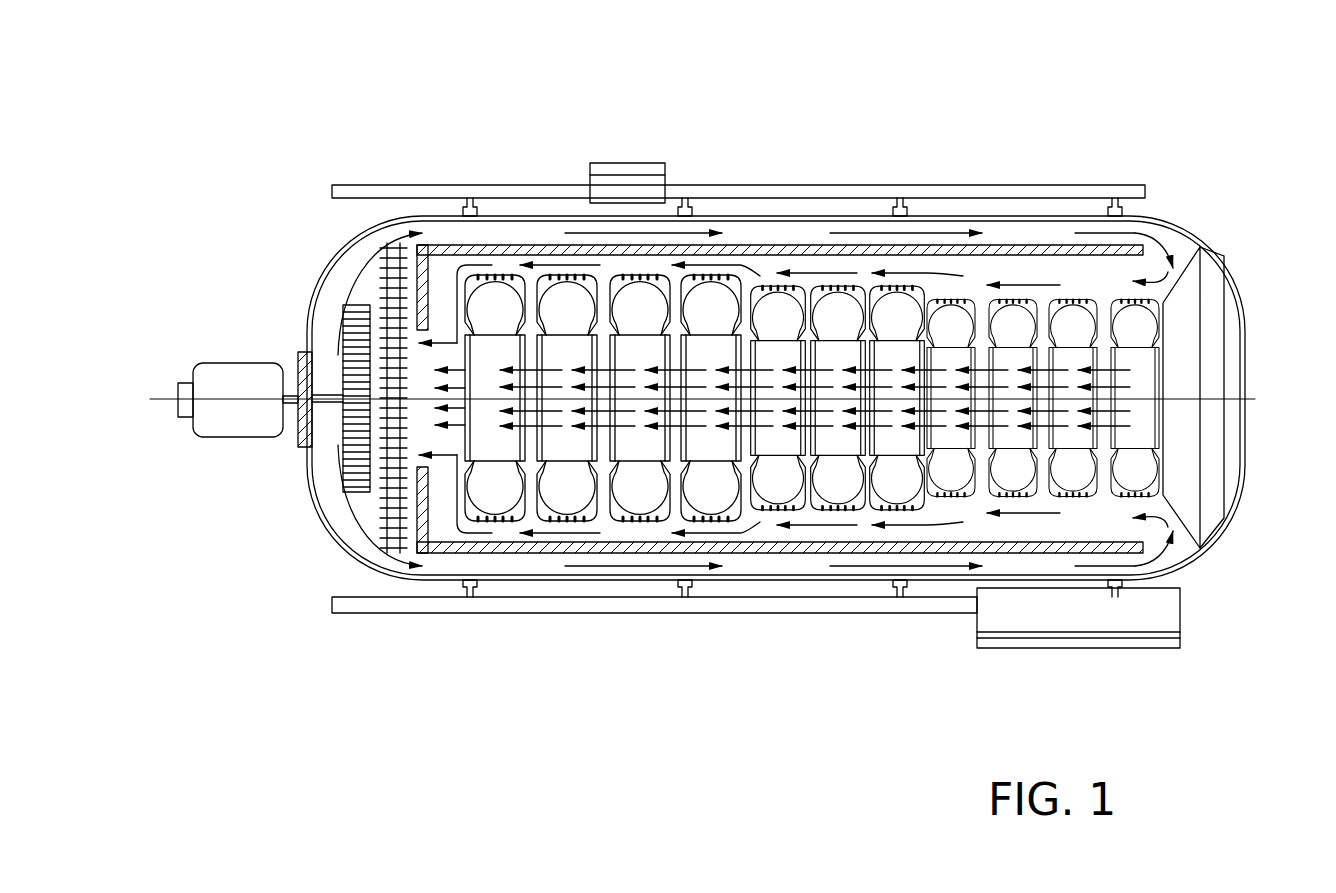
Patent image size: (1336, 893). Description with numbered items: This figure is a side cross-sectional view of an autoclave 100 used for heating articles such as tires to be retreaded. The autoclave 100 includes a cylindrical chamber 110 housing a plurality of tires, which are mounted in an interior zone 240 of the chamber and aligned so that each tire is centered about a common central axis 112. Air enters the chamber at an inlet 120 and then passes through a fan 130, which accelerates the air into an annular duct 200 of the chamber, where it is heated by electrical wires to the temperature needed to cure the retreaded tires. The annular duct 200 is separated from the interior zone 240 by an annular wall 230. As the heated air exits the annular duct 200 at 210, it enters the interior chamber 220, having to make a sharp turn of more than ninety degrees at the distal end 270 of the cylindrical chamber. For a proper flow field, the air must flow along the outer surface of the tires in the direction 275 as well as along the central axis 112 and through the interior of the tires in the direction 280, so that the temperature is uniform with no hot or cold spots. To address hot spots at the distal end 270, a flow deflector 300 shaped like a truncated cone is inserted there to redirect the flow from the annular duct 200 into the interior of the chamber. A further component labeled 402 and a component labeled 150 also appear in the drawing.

The autoclave 100 is at (290, 103).
The cylindrical chamber 110 is at (408, 210).
The central axis 112 is at (1258, 392).
The inlet 120 is at (298, 355).
The fan 130 is at (386, 538).
The fan 150 is at (357, 494).
The flat outer wall 402 is at (407, 258).
The annular duct 200 is at (787, 228).
The exit of annular duct 210 is at (1133, 232).
The interior chamber 220 is at (1075, 520).
The annular wall 230 is at (997, 243).
The interior zone 240 is at (808, 397).
The distal end 270 is at (1222, 460).
The direction along outer surface of tires 275 is at (1043, 277).
The direction through interior of tires 280 is at (1042, 383).
The flow deflector 300 is at (1205, 313).